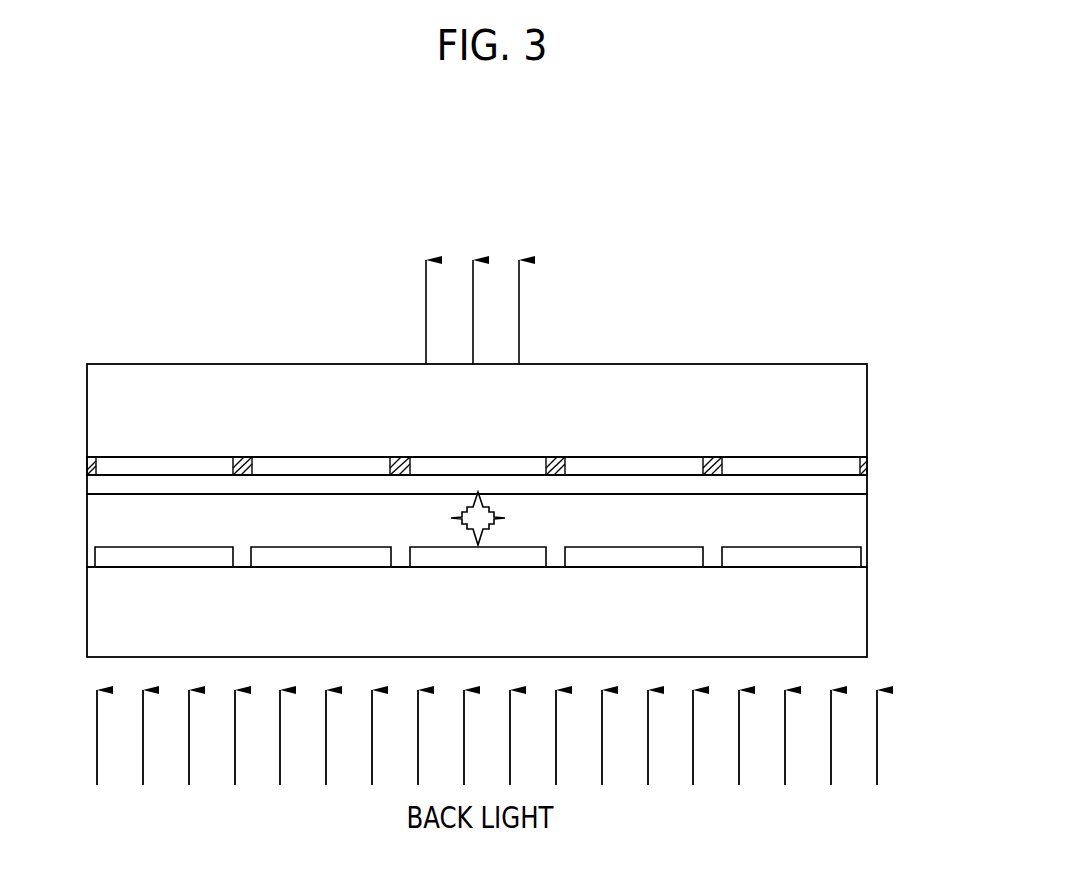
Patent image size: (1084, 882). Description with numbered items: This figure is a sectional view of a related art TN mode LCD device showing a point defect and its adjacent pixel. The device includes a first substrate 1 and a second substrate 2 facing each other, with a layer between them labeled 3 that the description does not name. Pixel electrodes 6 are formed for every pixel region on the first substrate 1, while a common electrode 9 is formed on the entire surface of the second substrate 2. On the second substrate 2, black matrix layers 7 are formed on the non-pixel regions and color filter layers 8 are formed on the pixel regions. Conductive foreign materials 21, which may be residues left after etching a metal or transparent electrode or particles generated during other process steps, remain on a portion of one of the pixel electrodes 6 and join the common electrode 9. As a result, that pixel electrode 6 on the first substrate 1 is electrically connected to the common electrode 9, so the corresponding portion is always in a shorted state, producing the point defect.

The first substrate 1 is at (858, 614).
The second substrate 2 is at (858, 410).
The liquid crystal layer 3 is at (858, 517).
The pixel electrodes 6 is at (850, 553).
The black matrix layers 7 is at (711, 457).
The color filter layers 8 is at (852, 463).
The common electrode 9 is at (858, 478).
The conductive foreign materials 21 is at (472, 513).